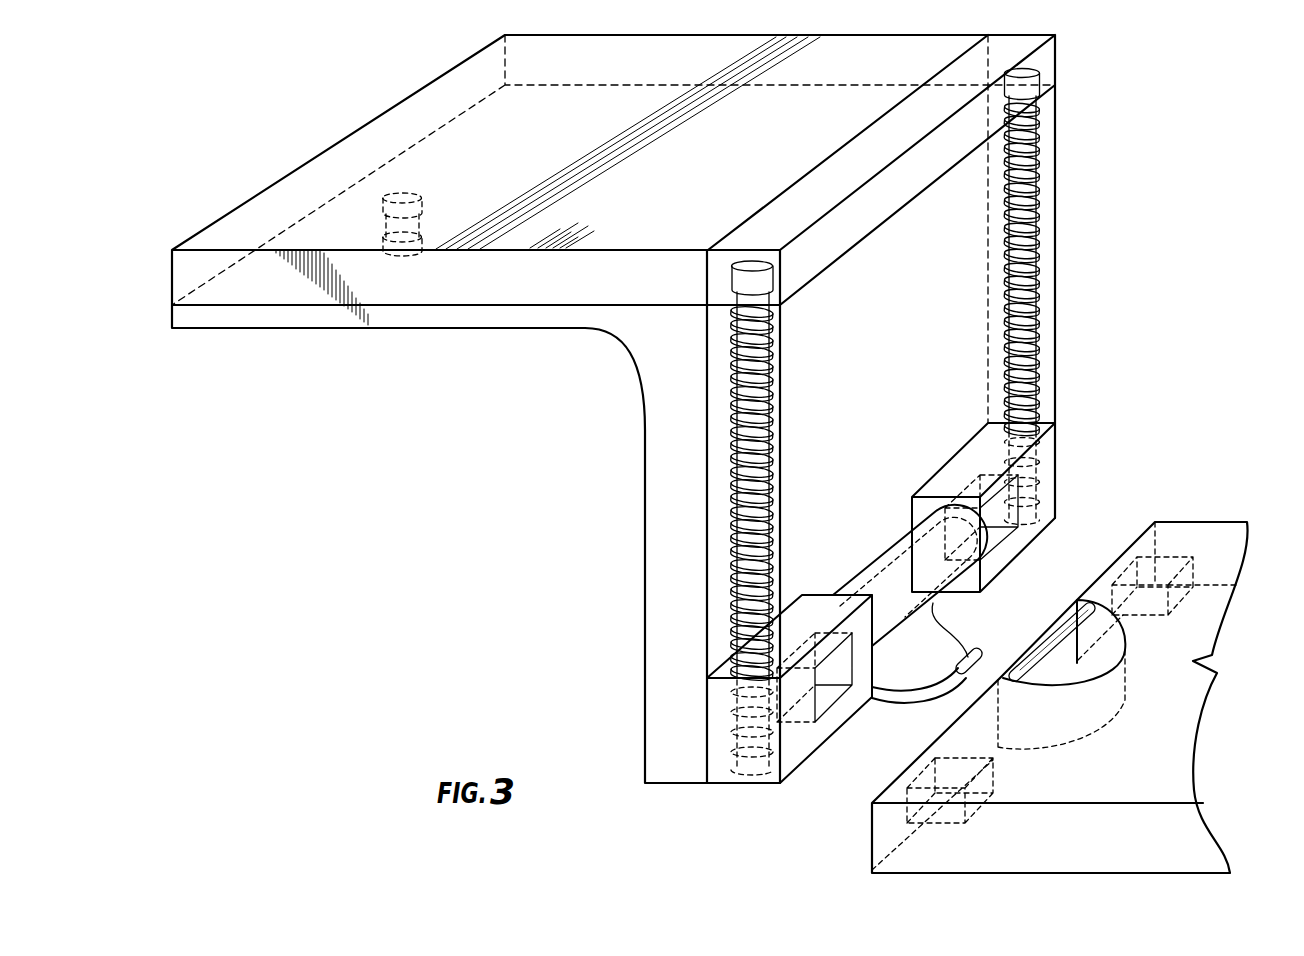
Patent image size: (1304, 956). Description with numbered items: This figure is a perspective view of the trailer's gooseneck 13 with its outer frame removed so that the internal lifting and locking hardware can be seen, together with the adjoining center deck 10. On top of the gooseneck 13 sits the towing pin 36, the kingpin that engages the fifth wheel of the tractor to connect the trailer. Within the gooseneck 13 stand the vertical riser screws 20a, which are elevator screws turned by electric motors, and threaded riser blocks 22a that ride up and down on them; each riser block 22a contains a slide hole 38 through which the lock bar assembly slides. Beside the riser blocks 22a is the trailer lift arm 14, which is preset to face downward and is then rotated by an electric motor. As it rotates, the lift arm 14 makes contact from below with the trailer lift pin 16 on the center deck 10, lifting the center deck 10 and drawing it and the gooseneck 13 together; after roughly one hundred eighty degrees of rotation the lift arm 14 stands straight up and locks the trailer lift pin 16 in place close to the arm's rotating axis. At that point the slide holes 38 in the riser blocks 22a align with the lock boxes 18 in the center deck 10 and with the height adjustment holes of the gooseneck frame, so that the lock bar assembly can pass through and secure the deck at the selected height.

The center deck 10 is at (1197, 842).
The gooseneck 13 is at (655, 593).
The trailer lift arm 14 is at (890, 677).
The trailer lift pin 16 is at (1050, 652).
The lock boxes 18 is at (937, 778).
The riser screws 20a is at (722, 520).
The riser blocks 22a is at (1045, 470).
The towing pin 36 is at (400, 192).
The slide holes 38 is at (830, 700).